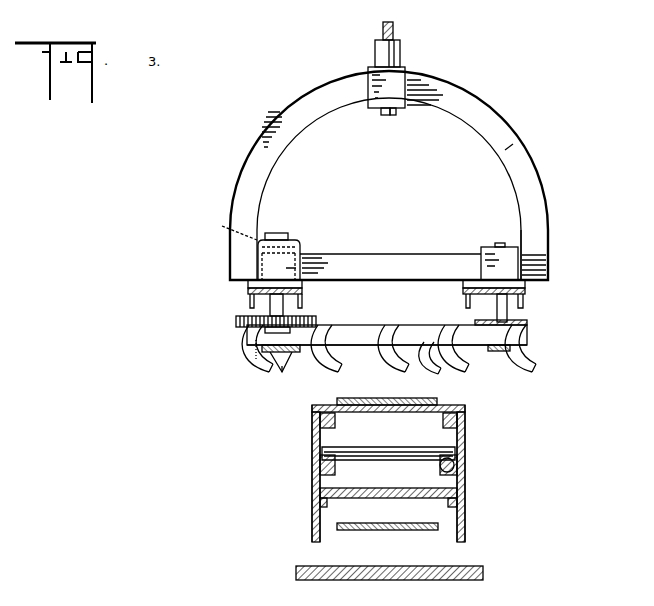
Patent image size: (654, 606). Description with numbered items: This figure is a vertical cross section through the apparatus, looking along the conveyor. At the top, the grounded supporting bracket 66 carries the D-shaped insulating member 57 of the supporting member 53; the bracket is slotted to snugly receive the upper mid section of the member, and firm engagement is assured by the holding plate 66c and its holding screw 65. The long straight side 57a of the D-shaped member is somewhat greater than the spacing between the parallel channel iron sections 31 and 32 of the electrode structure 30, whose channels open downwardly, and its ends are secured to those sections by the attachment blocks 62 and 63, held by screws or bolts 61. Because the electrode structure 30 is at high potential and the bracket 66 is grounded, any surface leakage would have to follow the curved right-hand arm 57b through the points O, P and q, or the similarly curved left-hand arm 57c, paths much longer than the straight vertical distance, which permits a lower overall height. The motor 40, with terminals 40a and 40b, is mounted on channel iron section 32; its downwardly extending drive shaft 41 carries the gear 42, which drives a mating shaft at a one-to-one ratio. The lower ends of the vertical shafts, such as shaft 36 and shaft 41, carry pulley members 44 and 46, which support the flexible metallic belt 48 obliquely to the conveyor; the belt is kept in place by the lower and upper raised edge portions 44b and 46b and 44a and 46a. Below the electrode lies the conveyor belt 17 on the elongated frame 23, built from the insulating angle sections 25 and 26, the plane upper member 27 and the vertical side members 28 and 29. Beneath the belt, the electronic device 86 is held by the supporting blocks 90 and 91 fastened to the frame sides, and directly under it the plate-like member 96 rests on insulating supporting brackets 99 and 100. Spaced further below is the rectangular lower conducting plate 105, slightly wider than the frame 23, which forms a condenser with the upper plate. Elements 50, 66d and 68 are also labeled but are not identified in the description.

The conveyor belt 17 is at (378, 398).
The elongated frame 23 is at (311, 463).
The angle section 25 is at (334, 420).
The angle section 26 is at (447, 420).
The upper member 27 is at (328, 404).
The side member 28 is at (313, 440).
The side member 29 is at (466, 440).
The electrode structure 30 is at (560, 325).
The channel iron section 31 is at (525, 296).
The channel iron section 32 is at (250, 289).
The vertical downwardly extending shaft 36 is at (498, 306).
The motor 40 is at (262, 258).
The motor terminal 40a is at (296, 240).
The motor terminal 40b is at (275, 234).
The motor drive shaft 41 is at (288, 300).
The gear 42 is at (238, 320).
The pulley member 44 is at (500, 352).
The upper raised edge portion 44a is at (520, 322).
The lower raised edge portion 44b is at (533, 348).
The pulley member 46 is at (282, 372).
The upper raised edge portion 46a is at (248, 332).
The lower raised edge portion 46b is at (262, 365).
The flexible metallic belt 48 is at (376, 326).
The hooks 50 is at (452, 362).
The supporting member 53 is at (318, 80).
The D-shaped insulating member 57 is at (283, 120).
The long straight side 57a is at (404, 258).
The right-hand arm 57b is at (525, 132).
The left-hand arm 57c is at (244, 182).
The screws or bolts 61 is at (224, 222).
The attachment block 62 is at (488, 258).
The attachment block 63 is at (302, 262).
The holding screw 65 is at (393, 113).
The supporting bracket 66 is at (371, 70).
The holding plate 66c is at (381, 112).
The socket neck 66d is at (378, 48).
The plug 68 is at (385, 26).
The electronic device 86 is at (389, 447).
The supporting block 90 is at (322, 470).
The supporting block 91 is at (458, 465).
The plate-like member 96 is at (401, 488).
The insulating supporting bracket 99 is at (328, 502).
The insulating supporting bracket 100 is at (448, 502).
The lower conducting plate 105 is at (299, 568).
The point on leakage path P is at (513, 150).
The point on leakage path q is at (426, 96).
The point on leakage path O is at (543, 240).